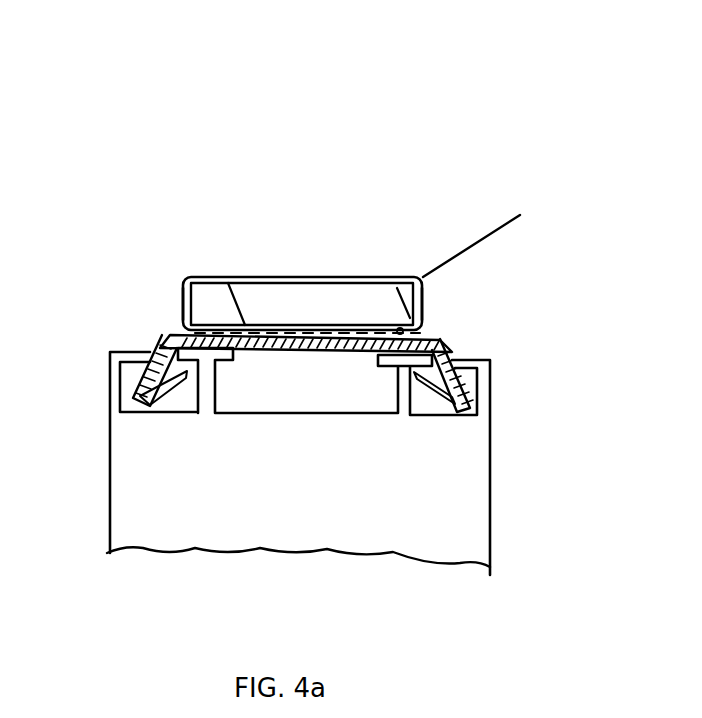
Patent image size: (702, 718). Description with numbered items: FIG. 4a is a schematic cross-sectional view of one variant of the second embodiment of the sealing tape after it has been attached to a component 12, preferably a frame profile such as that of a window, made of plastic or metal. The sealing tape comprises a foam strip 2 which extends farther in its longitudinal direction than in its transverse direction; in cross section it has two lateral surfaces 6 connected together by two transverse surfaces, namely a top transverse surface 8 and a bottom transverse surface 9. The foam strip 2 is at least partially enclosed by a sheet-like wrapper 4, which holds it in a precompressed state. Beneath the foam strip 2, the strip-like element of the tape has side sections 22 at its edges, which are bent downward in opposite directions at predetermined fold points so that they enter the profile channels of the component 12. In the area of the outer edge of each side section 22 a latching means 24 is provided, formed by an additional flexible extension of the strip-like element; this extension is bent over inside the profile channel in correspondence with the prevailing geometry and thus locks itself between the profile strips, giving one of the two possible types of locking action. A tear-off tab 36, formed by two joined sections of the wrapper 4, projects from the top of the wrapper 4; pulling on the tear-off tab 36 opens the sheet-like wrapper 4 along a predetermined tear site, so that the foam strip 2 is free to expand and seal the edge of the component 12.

The foam strip 2 is at (303, 377).
The sheet-like wrapper 4 is at (365, 275).
The lateral surfaces 6 is at (183, 296).
The top transverse surface 8 is at (313, 288).
The bottom transverse surface 9 is at (313, 288).
The component 12 is at (442, 497).
The side section 22 is at (145, 371).
The latching means 24 is at (172, 372).
The tear-off tab 36 is at (478, 238).